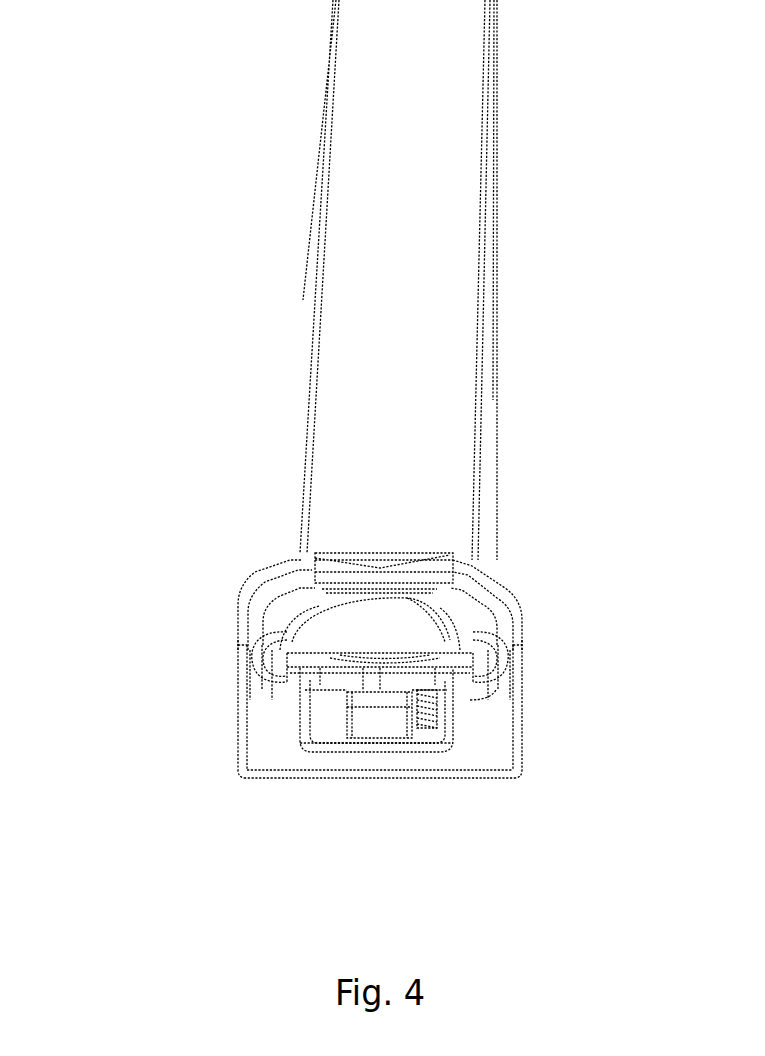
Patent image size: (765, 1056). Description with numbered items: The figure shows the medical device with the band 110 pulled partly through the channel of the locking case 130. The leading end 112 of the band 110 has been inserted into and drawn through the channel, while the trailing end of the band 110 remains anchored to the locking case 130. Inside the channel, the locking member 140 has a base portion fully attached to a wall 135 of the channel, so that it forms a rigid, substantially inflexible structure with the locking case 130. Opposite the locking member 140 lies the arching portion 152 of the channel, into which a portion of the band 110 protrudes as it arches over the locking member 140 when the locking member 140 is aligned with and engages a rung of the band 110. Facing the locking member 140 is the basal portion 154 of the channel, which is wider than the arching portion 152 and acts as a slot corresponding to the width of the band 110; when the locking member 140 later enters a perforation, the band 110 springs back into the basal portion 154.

The band 110 is at (362, 613).
The leading end 112 is at (335, 682).
The locking case 130 is at (262, 757).
The wall 135 is at (422, 732).
The locking member 140 is at (382, 715).
The arching portion 152 is at (435, 608).
The basal portion 154 is at (477, 652).